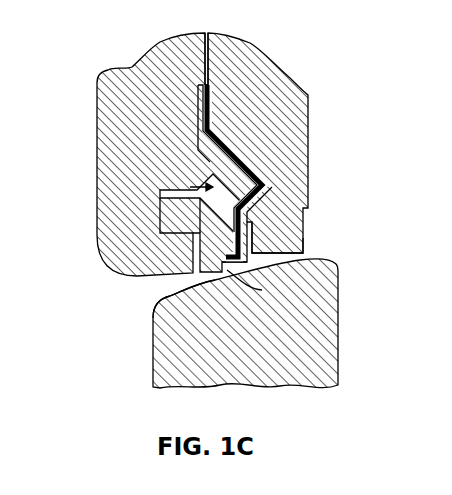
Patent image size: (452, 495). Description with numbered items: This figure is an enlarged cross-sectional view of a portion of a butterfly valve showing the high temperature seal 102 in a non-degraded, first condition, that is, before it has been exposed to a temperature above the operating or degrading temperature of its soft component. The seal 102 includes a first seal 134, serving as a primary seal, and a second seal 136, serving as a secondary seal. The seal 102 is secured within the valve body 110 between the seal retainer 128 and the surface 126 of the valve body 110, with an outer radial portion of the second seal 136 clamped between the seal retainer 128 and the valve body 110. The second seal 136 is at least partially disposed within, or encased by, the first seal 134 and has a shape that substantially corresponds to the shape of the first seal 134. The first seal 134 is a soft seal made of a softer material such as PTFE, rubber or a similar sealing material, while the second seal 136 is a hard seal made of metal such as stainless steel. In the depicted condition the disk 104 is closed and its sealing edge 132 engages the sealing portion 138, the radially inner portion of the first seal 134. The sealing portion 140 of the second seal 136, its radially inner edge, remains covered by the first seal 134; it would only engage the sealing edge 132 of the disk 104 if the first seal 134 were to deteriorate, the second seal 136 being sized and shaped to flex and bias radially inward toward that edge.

The seal 102 is at (213, 173).
The disk 104 is at (300, 330).
The valve body 110 is at (267, 117).
The surface 126 is at (215, 48).
The seal retainer 128 is at (115, 160).
The sealing edge 132 is at (185, 293).
The first seal 134 is at (262, 222).
The second seal 136 is at (246, 160).
The sealing portion 138 is at (262, 290).
The sealing portion 140 is at (235, 268).